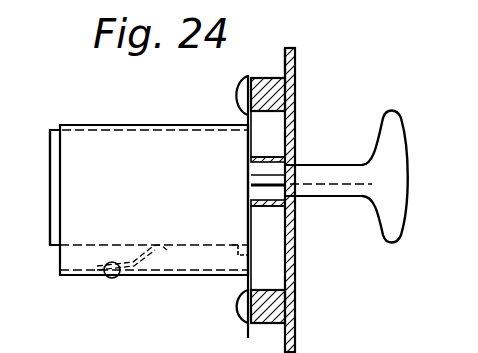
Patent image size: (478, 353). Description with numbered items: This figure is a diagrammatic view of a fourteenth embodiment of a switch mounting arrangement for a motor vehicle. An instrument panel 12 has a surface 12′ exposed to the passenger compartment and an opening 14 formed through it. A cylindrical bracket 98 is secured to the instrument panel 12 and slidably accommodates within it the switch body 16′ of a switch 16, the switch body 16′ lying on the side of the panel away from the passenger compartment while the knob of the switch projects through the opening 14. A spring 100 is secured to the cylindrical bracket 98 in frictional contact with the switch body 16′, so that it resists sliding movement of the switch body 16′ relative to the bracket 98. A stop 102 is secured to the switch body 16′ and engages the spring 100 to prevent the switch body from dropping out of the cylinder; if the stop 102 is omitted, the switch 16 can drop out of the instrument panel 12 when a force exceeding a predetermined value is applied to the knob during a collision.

The instrument panel 12 is at (294, 44).
The surface of instrument panel 12′ is at (295, 95).
The opening 14 is at (292, 163).
The switch 16 is at (163, 204).
The switch body 16′ is at (54, 168).
The cylindrical bracket 98 is at (72, 276).
The spring 100 is at (150, 260).
The stop 102 is at (232, 245).